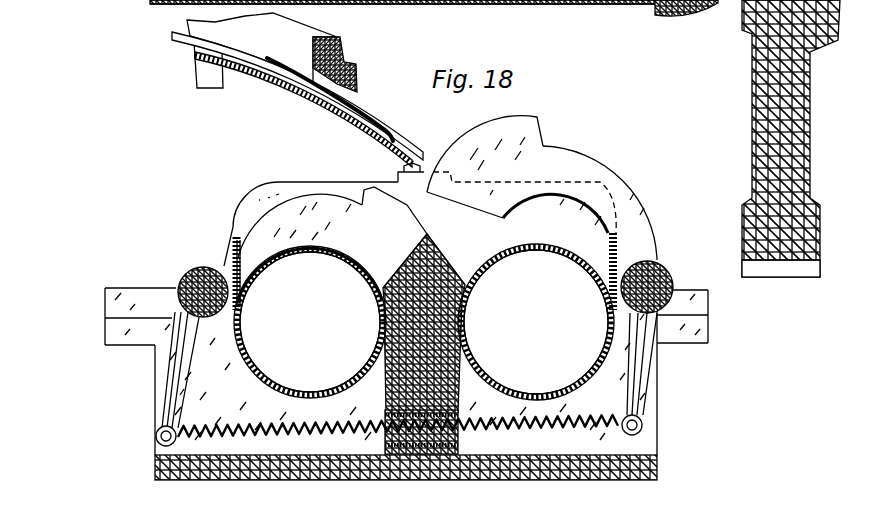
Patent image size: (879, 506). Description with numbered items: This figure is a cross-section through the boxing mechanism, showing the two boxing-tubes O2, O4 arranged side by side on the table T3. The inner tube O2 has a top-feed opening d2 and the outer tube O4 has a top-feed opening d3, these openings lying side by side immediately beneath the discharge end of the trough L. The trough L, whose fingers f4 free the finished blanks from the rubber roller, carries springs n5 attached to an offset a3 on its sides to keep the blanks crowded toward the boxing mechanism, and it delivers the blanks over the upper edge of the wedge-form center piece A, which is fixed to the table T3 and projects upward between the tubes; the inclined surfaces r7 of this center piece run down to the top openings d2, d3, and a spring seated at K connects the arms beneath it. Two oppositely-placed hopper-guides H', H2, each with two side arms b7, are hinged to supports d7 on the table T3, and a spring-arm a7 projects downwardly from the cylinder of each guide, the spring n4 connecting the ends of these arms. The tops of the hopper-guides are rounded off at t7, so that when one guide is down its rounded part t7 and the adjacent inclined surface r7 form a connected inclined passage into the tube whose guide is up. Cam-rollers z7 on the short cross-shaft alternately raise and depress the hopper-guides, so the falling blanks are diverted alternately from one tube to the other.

The table T3 is at (407, 16).
The cam-rollers z7 is at (686, 15).
The fingers f4 is at (262, 47).
The offset a3 is at (324, 64).
The trough L is at (297, 99).
The springs n5 is at (334, 99).
The hopper-guide H' is at (343, 213).
The side arms b7 is at (603, 160).
The hopper-guide H2 is at (535, 174).
The rounded-off top t7 is at (429, 235).
The central block A is at (424, 323).
The spring seat K is at (421, 422).
The boxing-tube O2 is at (310, 322).
The boxing-tube O4 is at (536, 322).
The inclined surfaces r7 is at (458, 247).
The top-feed opening d2 is at (387, 283).
The top-feed opening d3 is at (472, 275).
The spring n4 is at (398, 419).
The spring-arm a7 is at (670, 357).
The support d7 is at (676, 272).